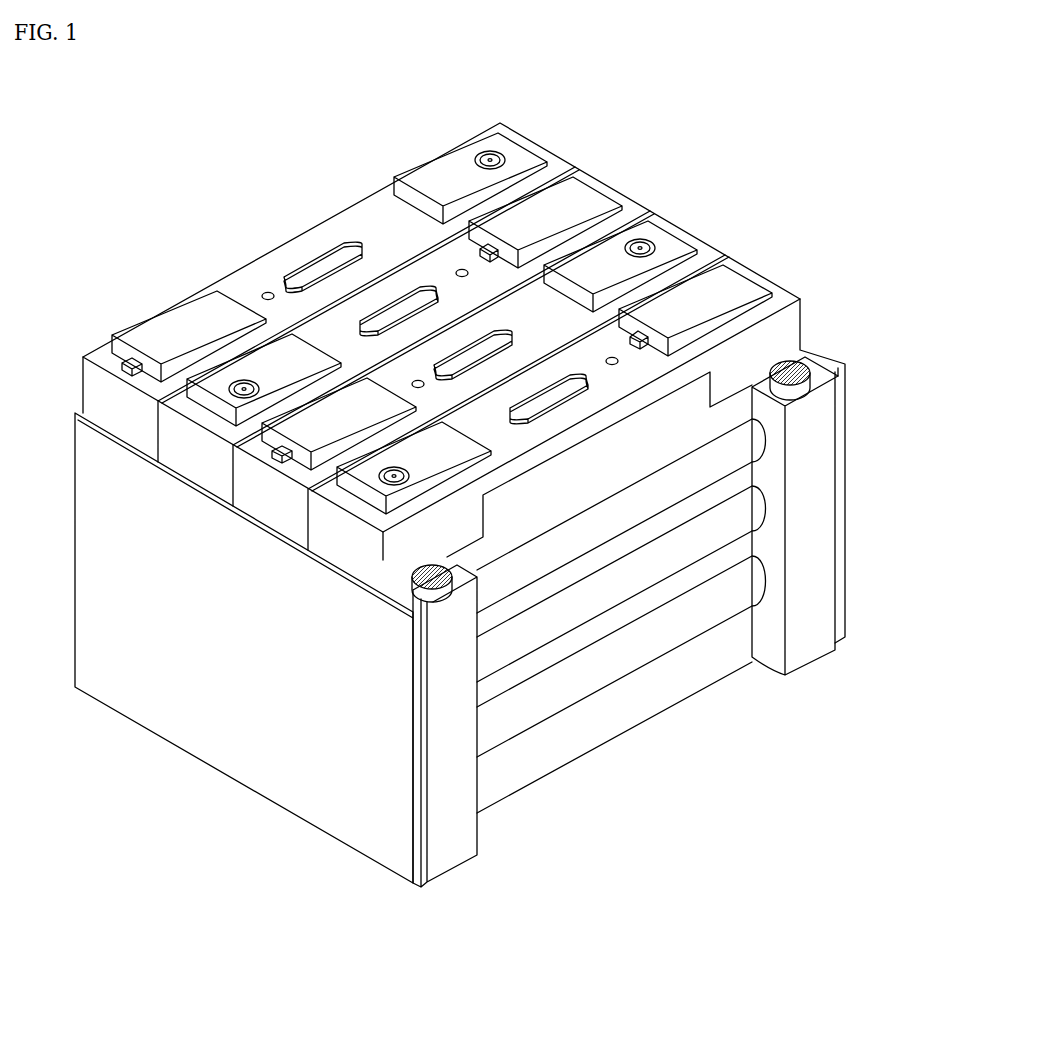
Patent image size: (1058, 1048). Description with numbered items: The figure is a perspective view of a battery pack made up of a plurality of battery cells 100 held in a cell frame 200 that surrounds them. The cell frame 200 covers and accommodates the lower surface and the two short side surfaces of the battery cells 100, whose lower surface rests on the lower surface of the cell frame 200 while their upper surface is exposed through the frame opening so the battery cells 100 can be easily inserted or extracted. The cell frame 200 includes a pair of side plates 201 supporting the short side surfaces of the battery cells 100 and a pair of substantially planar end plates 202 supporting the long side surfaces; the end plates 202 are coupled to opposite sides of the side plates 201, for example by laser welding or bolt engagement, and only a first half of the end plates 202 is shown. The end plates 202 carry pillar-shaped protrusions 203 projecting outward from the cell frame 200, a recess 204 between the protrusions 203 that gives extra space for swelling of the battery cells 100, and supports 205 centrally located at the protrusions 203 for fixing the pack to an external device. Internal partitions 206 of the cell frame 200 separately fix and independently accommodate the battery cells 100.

The battery cells 100 is at (640, 205).
The cell frame 200 is at (506, 649).
The side plates 201 is at (362, 835).
The end plates 202 is at (518, 815).
The protrusions 203 is at (835, 507).
The recess 204 is at (718, 667).
The supports 205 is at (805, 355).
The internal partitions 206 is at (712, 258).